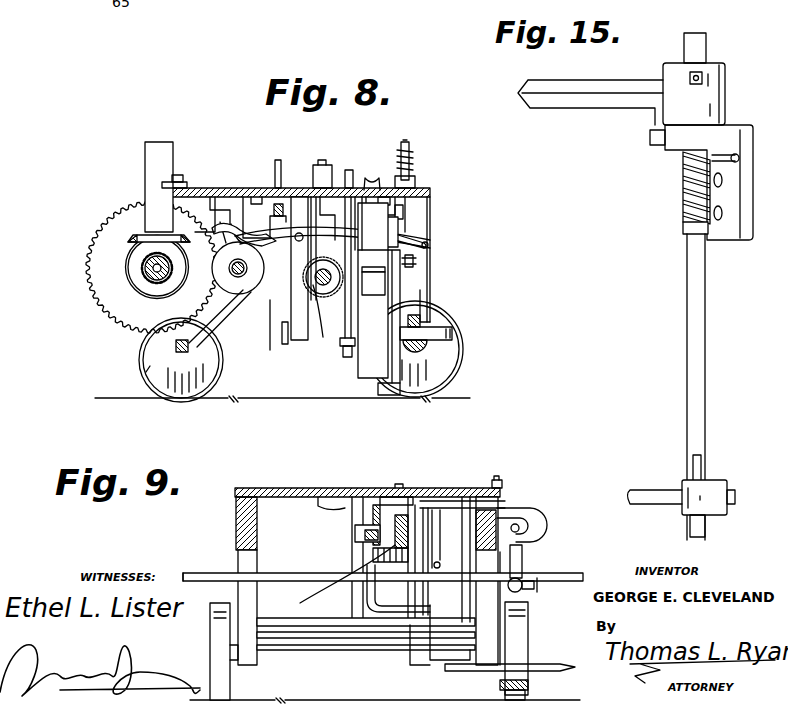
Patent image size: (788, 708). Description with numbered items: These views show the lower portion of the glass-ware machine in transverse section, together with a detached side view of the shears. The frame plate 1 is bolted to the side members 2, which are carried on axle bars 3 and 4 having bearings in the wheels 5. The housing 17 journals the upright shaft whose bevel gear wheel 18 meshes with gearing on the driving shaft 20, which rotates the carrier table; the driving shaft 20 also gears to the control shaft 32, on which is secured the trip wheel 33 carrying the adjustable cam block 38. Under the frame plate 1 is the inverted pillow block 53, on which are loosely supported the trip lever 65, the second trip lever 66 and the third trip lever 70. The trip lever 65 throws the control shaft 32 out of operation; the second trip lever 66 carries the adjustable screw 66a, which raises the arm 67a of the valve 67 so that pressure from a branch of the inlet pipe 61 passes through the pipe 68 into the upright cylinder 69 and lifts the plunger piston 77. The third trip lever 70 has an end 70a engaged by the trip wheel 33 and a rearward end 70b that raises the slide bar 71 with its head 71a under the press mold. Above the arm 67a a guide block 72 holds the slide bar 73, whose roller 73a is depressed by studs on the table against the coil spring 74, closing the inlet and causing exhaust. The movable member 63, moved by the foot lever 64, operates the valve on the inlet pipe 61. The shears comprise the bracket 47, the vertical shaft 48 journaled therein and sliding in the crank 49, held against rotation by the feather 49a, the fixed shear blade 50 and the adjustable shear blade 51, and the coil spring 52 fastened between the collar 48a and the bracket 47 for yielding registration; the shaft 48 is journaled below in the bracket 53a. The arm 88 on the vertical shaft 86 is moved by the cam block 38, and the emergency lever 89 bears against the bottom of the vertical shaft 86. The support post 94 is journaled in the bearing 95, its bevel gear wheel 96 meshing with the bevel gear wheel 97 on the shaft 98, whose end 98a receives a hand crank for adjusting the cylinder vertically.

In FIG. 8, the frame plate 1 is at (201, 188).
In FIG. 9, the frame plate 1 is at (259, 488).
In FIG. 8, the side members 2 is at (422, 306).
In FIG. 9, the side members 2 is at (368, 581).
In FIG. 8, the axle bar 3 is at (176, 346).
In FIG. 8, the axle bar 4 is at (428, 349).
In FIG. 9, the axle bar 4 is at (276, 652).
In FIG. 8, the wheels 5 is at (145, 371).
In FIG. 9, the wheels 5 is at (213, 630).
In FIG. 8, the housing 17 is at (166, 187).
In FIG. 8, the bevel gear wheel 18 is at (133, 240).
In FIG. 8, the driving shaft 20 is at (149, 281).
In FIG. 8, the control shaft 32 is at (237, 290).
In FIG. 8, the trip wheel 33 is at (204, 278).
In FIG. 8, the cam block 38 is at (233, 236).
In FIG. 15, the vertical shaft 48 is at (700, 330).
In FIG. 9, the vertical shaft 48 is at (400, 488).
In FIG. 15, the collar 48a is at (686, 232).
In FIG. 8, the crank 49 is at (276, 204).
In FIG. 15, the crank 49 is at (682, 506).
In FIG. 9, the crank 49 is at (393, 490).
In FIG. 15, the feather 49a is at (700, 465).
In FIG. 15, the bracket 47 is at (742, 190).
In FIG. 15, the shear blade 50 is at (600, 108).
In FIG. 15, the shear blade 51 is at (588, 90).
In FIG. 15, the coil spring 52 is at (682, 190).
In FIG. 8, the inverted pillow block 53 is at (322, 165).
In FIG. 9, the inverted pillow block 53 is at (445, 490).
In FIG. 9, the bracket 53a is at (373, 518).
In FIG. 9, the inlet pipe 61 is at (540, 550).
In FIG. 9, the movable member 63 is at (505, 482).
In FIG. 9, the foot lever 64 is at (540, 688).
In FIG. 8, the trip lever 65 is at (320, 225).
In FIG. 8, the second trip lever 66 is at (403, 252).
In FIG. 8, the screw 66a is at (415, 262).
In FIG. 8, the valve 67 is at (398, 236).
In FIG. 8, the arm 67a is at (423, 233).
In FIG. 8, the pipe 68 is at (386, 395).
In FIG. 8, the upright cylinder 69 is at (370, 372).
In FIG. 8, the third trip lever 70 is at (335, 289).
In FIG. 8, the end 70a is at (271, 352).
In FIG. 8, the rearward end 70b is at (402, 220).
In FIG. 8, the slide bar 71 is at (372, 222).
In FIG. 8, the head 71a is at (377, 173).
In FIG. 8, the guide block 72 is at (408, 176).
In FIG. 8, the slide bar 73 is at (400, 226).
In FIG. 8, the roller 73a is at (407, 146).
In FIG. 8, the coil spring 74 is at (412, 164).
In FIG. 8, the plunger piston 77 is at (373, 281).
In FIG. 8, the vertical shaft 86 is at (278, 160).
In FIG. 9, the vertical shaft 86 is at (316, 488).
In FIG. 8, the arm 88 is at (256, 228).
In FIG. 9, the arm 88 is at (355, 535).
In FIG. 8, the emergency lever 89 is at (294, 351).
In FIG. 9, the emergency lever 89 is at (560, 664).
In FIG. 8, the support post 94 is at (346, 170).
In FIG. 9, the bearing 95 is at (336, 584).
In FIG. 9, the bevel gear wheel 96 is at (365, 585).
In FIG. 9, the bevel gear wheel 97 is at (395, 585).
In FIG. 9, the shaft 98 is at (276, 581).
In FIG. 9, the end 98a is at (196, 581).